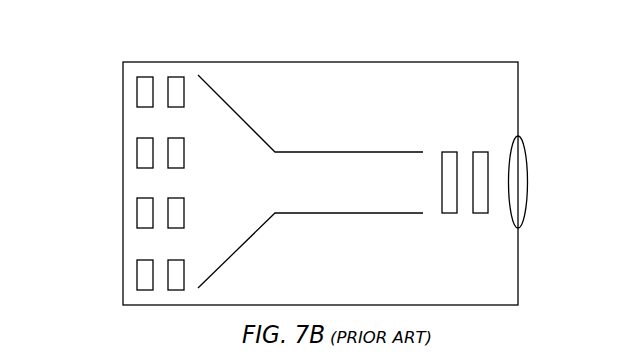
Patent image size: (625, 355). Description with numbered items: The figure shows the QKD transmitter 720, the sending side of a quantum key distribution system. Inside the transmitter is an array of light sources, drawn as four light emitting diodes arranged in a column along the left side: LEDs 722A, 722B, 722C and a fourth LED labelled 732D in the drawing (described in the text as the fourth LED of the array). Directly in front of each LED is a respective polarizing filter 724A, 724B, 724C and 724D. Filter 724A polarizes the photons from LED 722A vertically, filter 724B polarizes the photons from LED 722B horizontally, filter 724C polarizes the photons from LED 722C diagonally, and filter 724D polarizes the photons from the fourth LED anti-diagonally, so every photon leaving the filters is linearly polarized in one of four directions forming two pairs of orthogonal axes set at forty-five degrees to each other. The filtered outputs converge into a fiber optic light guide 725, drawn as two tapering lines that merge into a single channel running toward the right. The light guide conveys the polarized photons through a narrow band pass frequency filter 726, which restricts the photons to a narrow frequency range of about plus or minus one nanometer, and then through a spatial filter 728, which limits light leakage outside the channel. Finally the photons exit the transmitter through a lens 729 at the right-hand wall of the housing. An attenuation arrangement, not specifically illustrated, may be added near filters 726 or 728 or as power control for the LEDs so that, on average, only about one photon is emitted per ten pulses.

The QKD transmitter 720 is at (415, 85).
The light emitting diode 722A is at (137, 92).
The light emitting diode 722B is at (137, 153).
The light emitting diode 722C is at (137, 213).
The laser source 732D is at (137, 274).
The polarizing filter 724A is at (184, 92).
The polarizing filter 724B is at (184, 153).
The polarizing filter 724C is at (184, 213).
The polarizing filter 724D is at (184, 274).
The fiber optic light guide 725 is at (335, 213).
The narrow band pass frequency filter 726 is at (450, 213).
The spatial filter 728 is at (480, 152).
The lens 729 is at (525, 162).